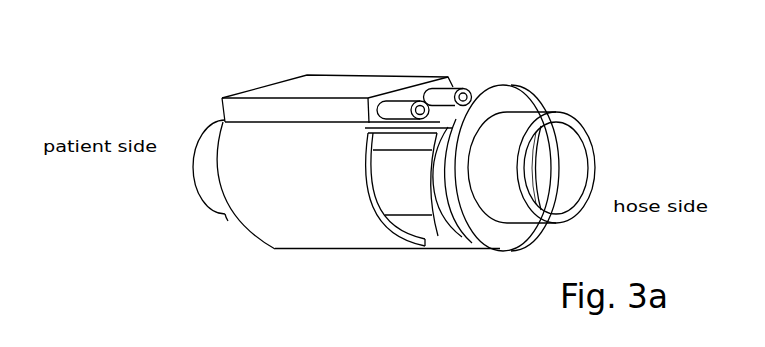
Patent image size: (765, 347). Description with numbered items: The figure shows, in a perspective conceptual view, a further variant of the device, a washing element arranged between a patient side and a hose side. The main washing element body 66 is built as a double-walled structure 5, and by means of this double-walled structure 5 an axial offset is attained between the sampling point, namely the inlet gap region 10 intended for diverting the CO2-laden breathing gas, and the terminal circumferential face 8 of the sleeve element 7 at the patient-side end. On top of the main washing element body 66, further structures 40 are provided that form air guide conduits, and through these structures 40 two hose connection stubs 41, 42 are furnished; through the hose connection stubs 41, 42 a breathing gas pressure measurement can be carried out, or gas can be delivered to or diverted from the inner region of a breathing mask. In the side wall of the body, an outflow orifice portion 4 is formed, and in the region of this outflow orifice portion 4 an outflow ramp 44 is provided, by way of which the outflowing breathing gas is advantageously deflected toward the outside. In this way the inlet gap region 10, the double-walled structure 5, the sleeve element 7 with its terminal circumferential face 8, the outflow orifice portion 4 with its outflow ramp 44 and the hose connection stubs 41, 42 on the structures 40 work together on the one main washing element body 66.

The outflow orifice portion 4 is at (397, 173).
The double-walled structure 5 is at (273, 222).
The sleeve element 7 is at (205, 148).
The terminal circumferential face 8 is at (195, 166).
The inlet gap region 10 is at (226, 222).
The further structures 40 is at (328, 82).
The hose connection stub 41 is at (400, 103).
The hose connection stub 42 is at (457, 88).
The outflow ramp 44 is at (437, 220).
The main washing element body 66 is at (315, 237).